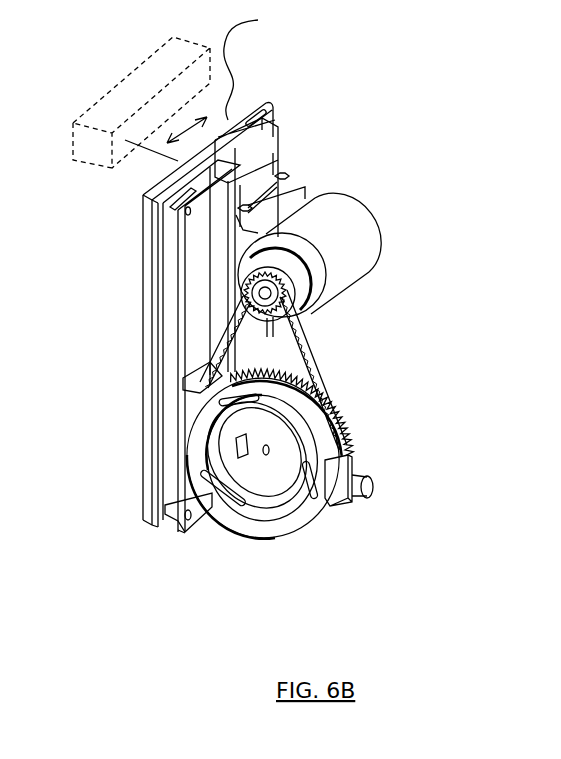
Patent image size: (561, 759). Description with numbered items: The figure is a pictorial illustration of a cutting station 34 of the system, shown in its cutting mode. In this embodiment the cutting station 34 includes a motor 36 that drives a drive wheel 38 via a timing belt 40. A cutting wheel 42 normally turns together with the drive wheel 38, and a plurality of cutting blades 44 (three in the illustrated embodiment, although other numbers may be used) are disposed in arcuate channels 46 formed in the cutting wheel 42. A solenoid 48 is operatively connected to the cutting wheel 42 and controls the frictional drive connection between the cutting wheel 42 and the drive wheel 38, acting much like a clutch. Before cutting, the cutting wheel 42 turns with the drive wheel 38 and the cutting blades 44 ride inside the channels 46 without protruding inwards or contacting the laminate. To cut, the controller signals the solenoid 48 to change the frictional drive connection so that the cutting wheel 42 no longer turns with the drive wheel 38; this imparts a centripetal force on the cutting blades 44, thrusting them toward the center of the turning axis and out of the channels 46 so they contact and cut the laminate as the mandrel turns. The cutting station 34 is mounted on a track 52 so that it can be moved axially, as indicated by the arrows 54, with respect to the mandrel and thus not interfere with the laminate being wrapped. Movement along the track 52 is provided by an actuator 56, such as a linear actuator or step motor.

The cutting station 34 is at (378, 536).
The motor 36 is at (322, 213).
The drive wheel 38 is at (280, 374).
The timing belt 40 is at (320, 365).
The cutting wheel 42 is at (273, 513).
The cutting blades 44 is at (168, 505).
The arcuate channels 46 is at (216, 505).
The solenoid 48 is at (370, 480).
The track 52 is at (266, 103).
The arrows 54 is at (255, 64).
The actuator 56 is at (140, 64).